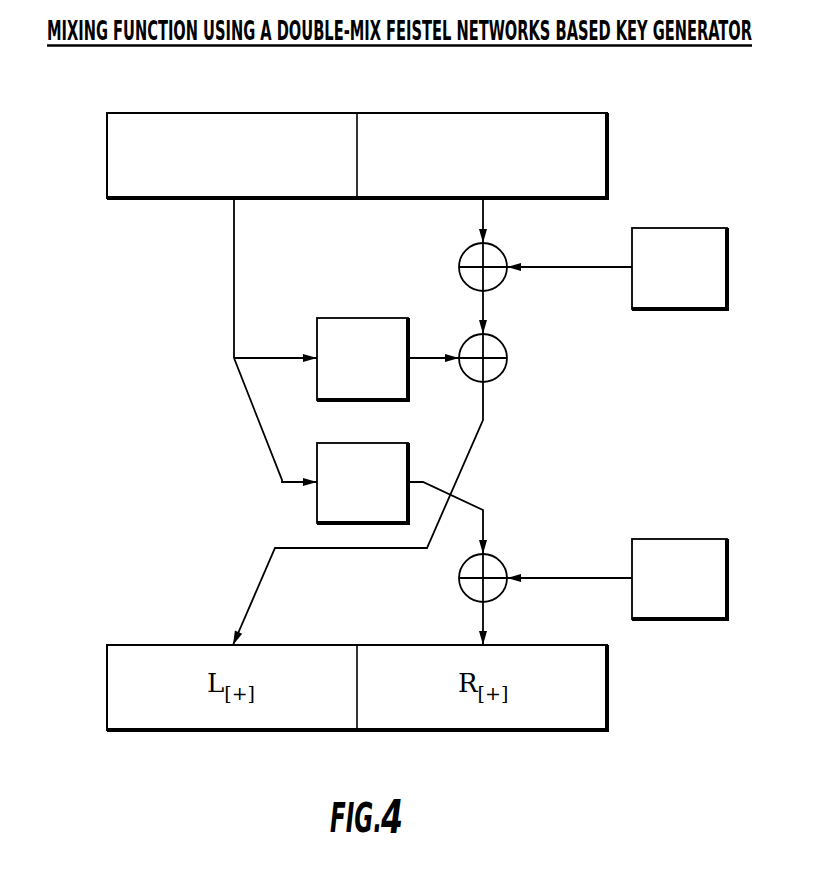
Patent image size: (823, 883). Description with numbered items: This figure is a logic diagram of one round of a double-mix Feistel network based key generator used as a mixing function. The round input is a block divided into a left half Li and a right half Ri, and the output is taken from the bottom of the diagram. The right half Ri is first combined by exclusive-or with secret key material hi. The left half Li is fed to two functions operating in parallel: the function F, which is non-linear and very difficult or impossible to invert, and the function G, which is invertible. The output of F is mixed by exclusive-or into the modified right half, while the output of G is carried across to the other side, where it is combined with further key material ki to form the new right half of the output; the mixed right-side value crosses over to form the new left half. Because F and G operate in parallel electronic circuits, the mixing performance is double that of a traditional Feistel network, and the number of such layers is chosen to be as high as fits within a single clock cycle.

The left half input Li is at (233, 248).
The right half input Ri is at (483, 191).
The non-linear function F is at (363, 360).
The invertible function G is at (363, 484).
The round mixing value hi is at (680, 269).
The round key ki is at (680, 580).